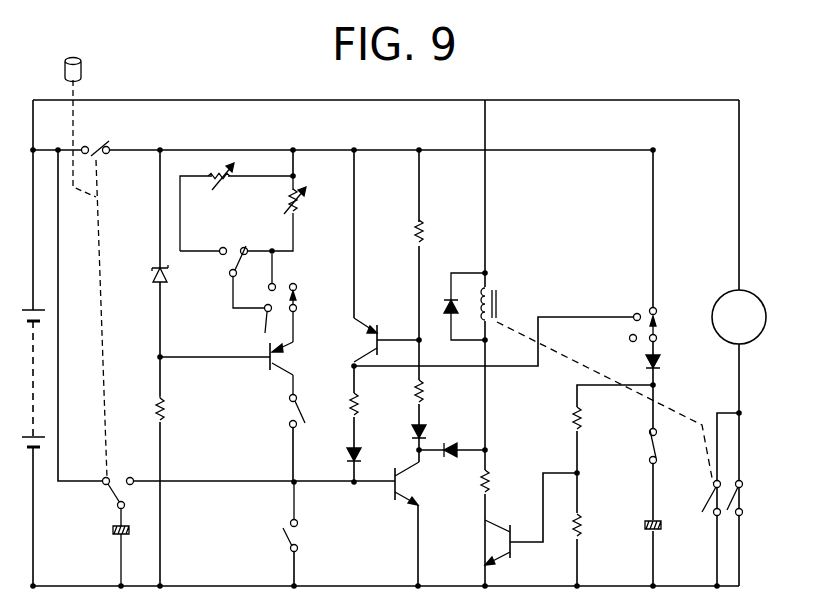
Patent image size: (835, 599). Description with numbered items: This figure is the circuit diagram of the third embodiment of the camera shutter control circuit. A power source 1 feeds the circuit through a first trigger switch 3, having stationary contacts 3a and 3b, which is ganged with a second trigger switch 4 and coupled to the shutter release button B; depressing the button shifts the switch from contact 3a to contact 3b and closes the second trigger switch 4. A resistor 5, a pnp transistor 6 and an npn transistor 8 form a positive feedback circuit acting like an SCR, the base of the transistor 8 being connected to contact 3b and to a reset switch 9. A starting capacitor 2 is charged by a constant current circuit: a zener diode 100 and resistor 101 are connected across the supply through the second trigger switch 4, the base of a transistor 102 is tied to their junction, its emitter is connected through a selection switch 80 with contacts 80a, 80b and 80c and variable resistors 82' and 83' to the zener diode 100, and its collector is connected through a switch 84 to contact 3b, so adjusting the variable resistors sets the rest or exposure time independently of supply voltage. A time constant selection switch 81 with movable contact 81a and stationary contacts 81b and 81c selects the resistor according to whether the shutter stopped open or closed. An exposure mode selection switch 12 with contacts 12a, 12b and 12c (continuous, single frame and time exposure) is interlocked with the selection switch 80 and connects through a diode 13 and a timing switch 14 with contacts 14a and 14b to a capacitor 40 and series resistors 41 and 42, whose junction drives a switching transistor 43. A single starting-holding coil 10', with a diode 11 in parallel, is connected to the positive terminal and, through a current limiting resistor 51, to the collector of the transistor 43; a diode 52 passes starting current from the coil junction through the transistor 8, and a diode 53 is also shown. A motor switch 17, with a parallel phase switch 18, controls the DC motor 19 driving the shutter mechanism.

The shutter release button B is at (82, 70).
The power source 1 is at (30, 308).
The starting capacitor 2 is at (112, 530).
The first trigger switch 3 is at (106, 474).
The stationary contact 3a is at (104, 478).
The stationary contact 3b is at (130, 478).
The second trigger switch 4 is at (92, 143).
The resistor 5 is at (424, 392).
The pnp transistor 6 is at (372, 340).
The npn transistor 8 is at (406, 468).
The reset switch 9 is at (285, 537).
The starting-holding coil 10' is at (596, 378).
The diode 11 is at (449, 314).
The exposure mode selection switch 12 is at (637, 310).
The stationary contact 12a is at (656, 309).
The stationary contact 12b is at (633, 314).
The stationary contact 12c is at (628, 338).
The diode 13 is at (663, 362).
The timing switch 14 is at (647, 460).
The timing switch contact 14a is at (650, 438).
The stationary contact 14b is at (656, 435).
The motor switch 17 is at (706, 500).
The phase switch 18 is at (744, 506).
The DC motor 19 is at (733, 290).
The capacitor 40 is at (663, 526).
The resistor 41 is at (573, 420).
The resistor 42 is at (582, 525).
The switching transistor 43 is at (505, 543).
The current limiting resistor 51 is at (491, 474).
The diode 52 is at (451, 458).
The diode 53 is at (426, 432).
The selection switch 80 is at (282, 296).
The stationary contact 80a is at (297, 287).
The stationary contact 80b is at (276, 284).
The stationary contact 80c is at (243, 328).
The time constant selection switch 81 is at (236, 266).
The movable contact 81a is at (223, 247).
The stationary contact 81b is at (247, 250).
The stationary contact 81c is at (221, 255).
The variable resistor 82' is at (236, 207).
The variable resistor 83' is at (292, 213).
The switch 84 is at (290, 417).
The zener diode 100 is at (153, 272).
The resistor 101 is at (167, 413).
The transistor 102 is at (282, 357).